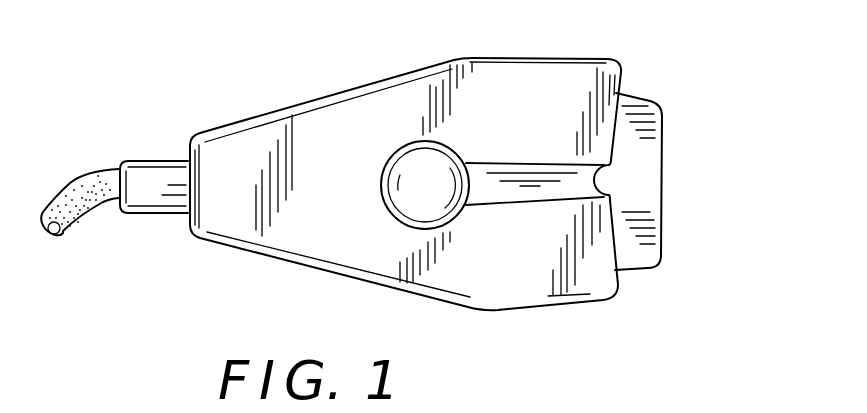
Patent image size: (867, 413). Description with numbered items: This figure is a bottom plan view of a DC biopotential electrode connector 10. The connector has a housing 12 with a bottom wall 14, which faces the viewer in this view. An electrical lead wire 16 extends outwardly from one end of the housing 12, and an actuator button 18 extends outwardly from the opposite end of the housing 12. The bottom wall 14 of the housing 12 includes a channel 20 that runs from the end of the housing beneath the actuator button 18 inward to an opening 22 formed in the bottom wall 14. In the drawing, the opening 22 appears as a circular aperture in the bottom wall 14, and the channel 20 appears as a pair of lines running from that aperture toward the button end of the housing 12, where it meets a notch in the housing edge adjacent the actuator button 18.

The DC biopotential electrode connector 10 is at (394, 167).
The housing 12 is at (613, 70).
The bottom wall 14 is at (341, 200).
The electrical lead wire 16 is at (75, 230).
The actuator button 18 is at (638, 200).
The channel 20 is at (507, 192).
The opening 22 is at (422, 164).